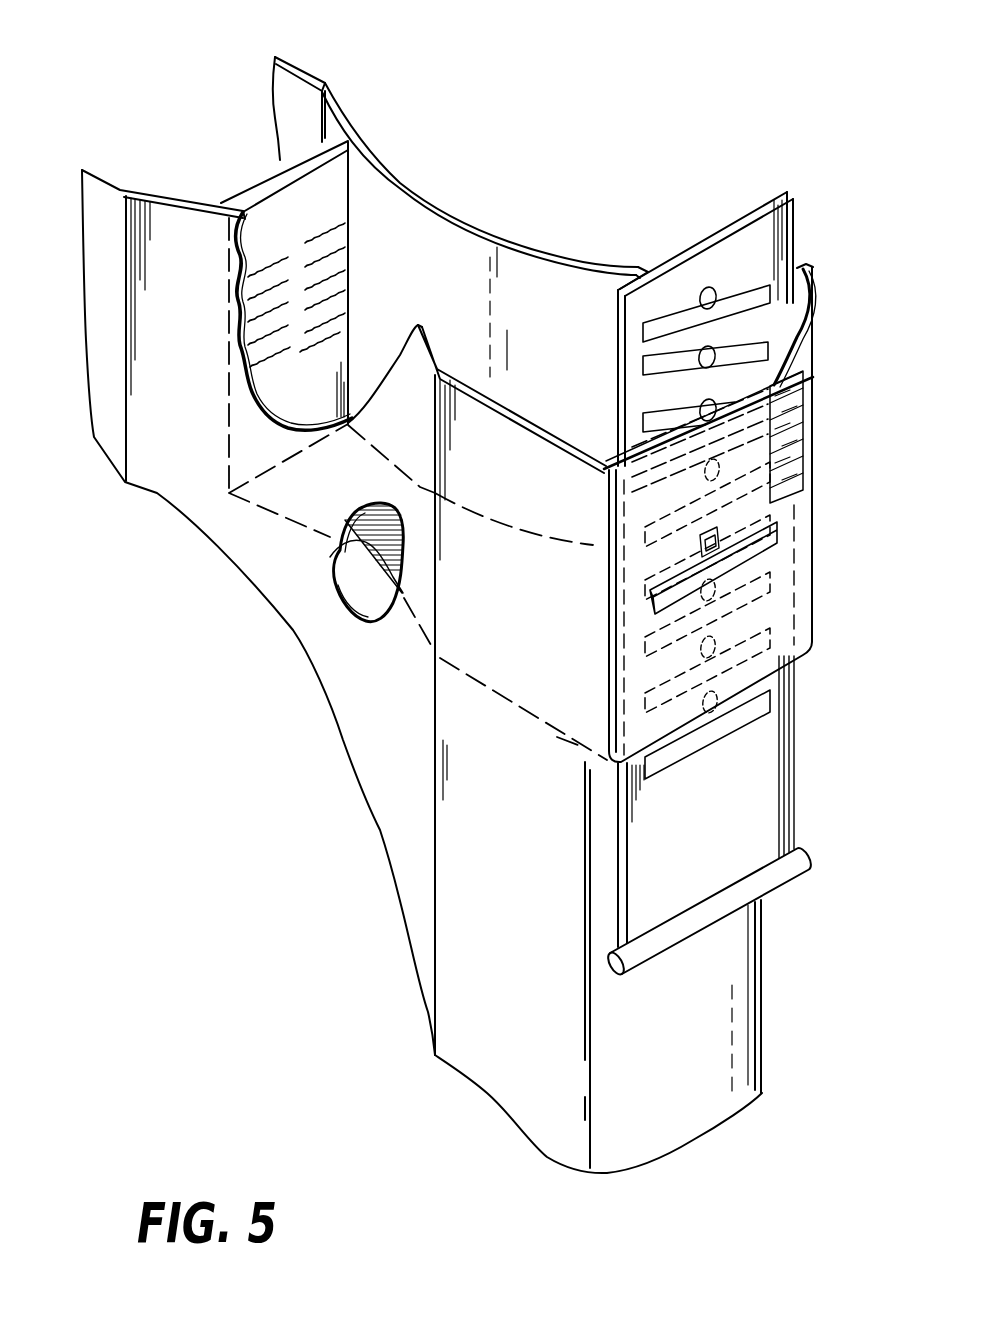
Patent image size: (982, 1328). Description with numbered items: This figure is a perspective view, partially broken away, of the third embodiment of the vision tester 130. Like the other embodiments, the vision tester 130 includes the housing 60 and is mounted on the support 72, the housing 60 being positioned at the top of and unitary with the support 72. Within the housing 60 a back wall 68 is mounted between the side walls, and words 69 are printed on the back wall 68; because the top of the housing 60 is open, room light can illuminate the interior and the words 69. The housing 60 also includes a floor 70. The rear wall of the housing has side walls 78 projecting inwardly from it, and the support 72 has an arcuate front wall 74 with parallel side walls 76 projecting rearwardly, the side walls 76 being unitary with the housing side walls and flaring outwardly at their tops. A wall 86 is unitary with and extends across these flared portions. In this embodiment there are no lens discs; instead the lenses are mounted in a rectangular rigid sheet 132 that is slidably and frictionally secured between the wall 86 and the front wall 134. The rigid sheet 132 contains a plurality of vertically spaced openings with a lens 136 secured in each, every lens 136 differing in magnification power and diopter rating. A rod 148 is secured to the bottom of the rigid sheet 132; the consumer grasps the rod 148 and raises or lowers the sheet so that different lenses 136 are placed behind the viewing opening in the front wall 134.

The housing 60 is at (408, 186).
The back wall 68 is at (315, 412).
The words 69 is at (302, 246).
The floor 70 is at (332, 558).
The support 72 is at (305, 668).
The arcuate front wall 74 is at (688, 1053).
The side walls 76 is at (504, 995).
The side walls 78 is at (307, 69).
The wall 86 is at (611, 465).
The vision tester 130 is at (545, 229).
The rigid sheet 132 is at (705, 329).
The front wall 134 is at (812, 537).
The lens 136 is at (750, 277).
The rod 148 is at (772, 875).